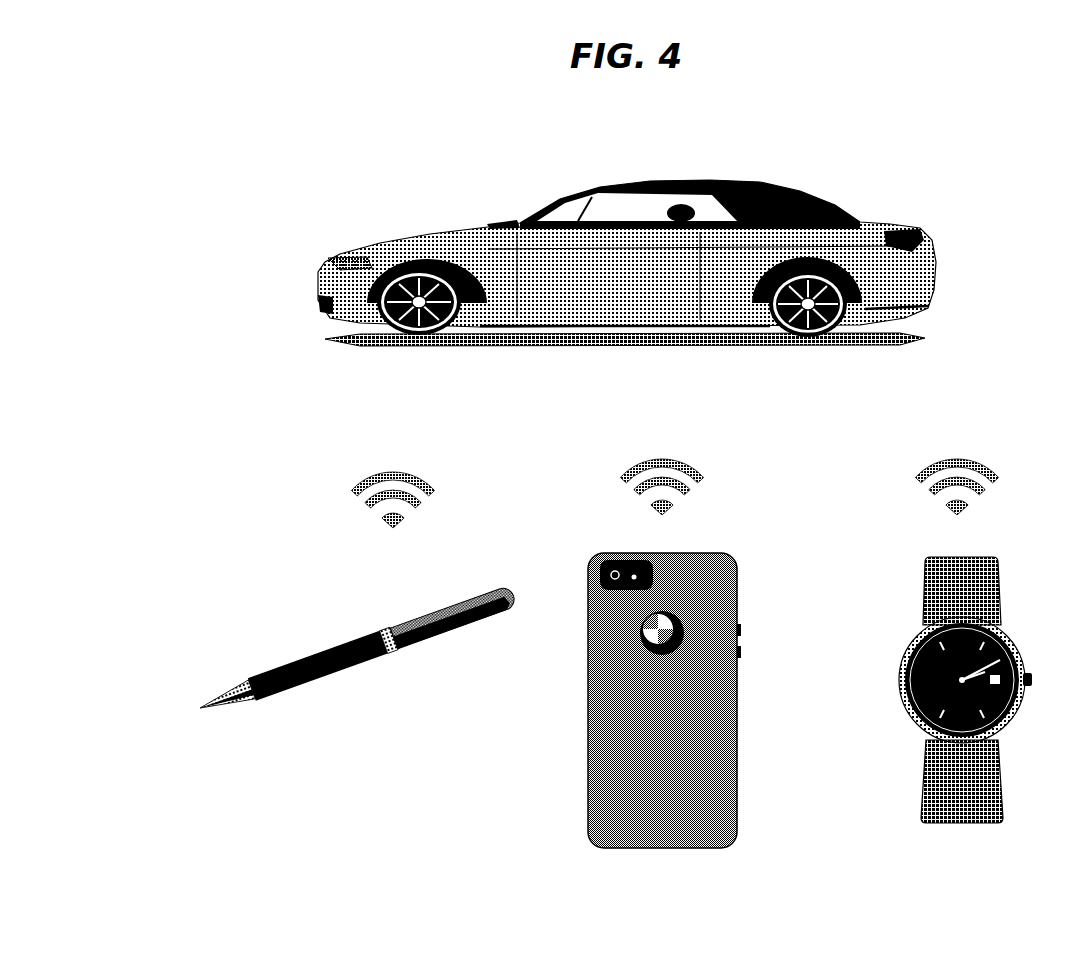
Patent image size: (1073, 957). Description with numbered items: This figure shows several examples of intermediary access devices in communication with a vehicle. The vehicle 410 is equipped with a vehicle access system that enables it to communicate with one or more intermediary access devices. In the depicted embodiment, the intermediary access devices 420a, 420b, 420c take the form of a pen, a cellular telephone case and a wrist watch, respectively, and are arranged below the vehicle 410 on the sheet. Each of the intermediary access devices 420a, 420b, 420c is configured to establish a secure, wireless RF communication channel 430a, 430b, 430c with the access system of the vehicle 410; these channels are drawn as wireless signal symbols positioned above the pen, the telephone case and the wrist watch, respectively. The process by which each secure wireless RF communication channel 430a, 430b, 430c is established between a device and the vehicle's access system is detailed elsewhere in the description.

The vehicle 410 is at (322, 270).
The intermediary access device 420a is at (216, 699).
The intermediary access device 420b is at (589, 808).
The intermediary access device 420c is at (931, 792).
The secure wireless RF communication channel 430a is at (354, 486).
The secure wireless RF communication channel 430b is at (622, 478).
The secure wireless RF communication channel 430c is at (918, 471).